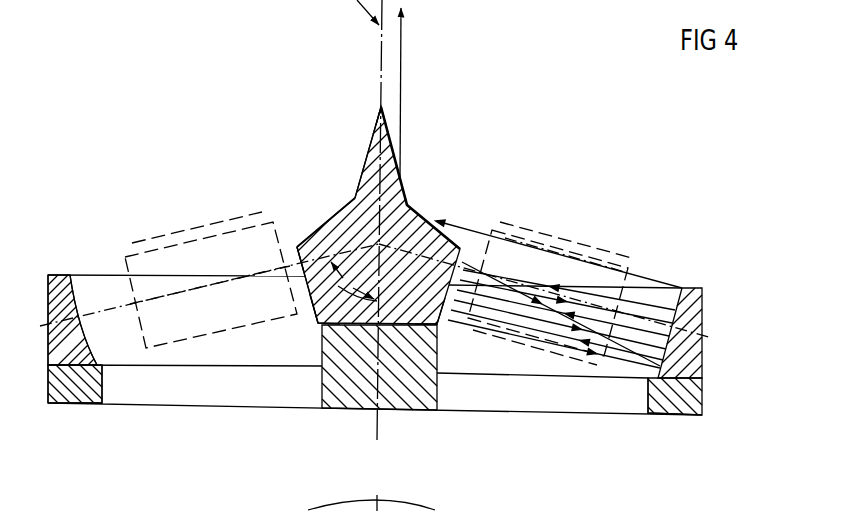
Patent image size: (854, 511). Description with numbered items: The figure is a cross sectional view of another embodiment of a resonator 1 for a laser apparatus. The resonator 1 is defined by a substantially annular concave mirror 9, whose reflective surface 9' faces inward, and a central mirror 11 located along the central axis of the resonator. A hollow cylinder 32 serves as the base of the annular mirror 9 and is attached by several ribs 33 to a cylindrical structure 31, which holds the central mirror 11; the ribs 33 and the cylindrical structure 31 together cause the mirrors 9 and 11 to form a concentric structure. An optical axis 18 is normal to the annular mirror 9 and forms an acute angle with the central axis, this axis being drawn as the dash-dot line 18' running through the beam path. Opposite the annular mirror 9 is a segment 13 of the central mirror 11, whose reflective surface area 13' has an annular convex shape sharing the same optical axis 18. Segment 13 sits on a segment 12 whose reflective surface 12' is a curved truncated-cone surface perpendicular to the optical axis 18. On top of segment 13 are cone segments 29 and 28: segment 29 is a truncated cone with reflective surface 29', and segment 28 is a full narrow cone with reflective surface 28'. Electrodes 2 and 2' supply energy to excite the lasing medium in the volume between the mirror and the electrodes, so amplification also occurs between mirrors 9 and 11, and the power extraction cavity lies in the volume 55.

The resonator 1 is at (510, 162).
The electrode 2 is at (550, 274).
The electrode 2' is at (535, 354).
The annular concave mirror 9 is at (78, 320).
The reflective surface 9' is at (103, 320).
The central mirror 11 is at (330, 196).
The segment 12 is at (310, 323).
The reflective surface 12' is at (449, 329).
The segment 13 is at (280, 285).
The reflective surface area 13' is at (274, 252).
The optical axis 18 is at (211, 280).
The optical axis of first light guide 18' is at (210, 301).
The cone segment 28 is at (351, 152).
The reflective surface 28' is at (355, 107).
The cone segment 29 is at (309, 222).
The reflective surface 29' is at (425, 178).
The cylindrical structure 31 is at (352, 397).
The hollow cylinder 32 is at (72, 392).
The ribs 33 is at (211, 390).
The power extraction cavity volume 55 is at (612, 264).